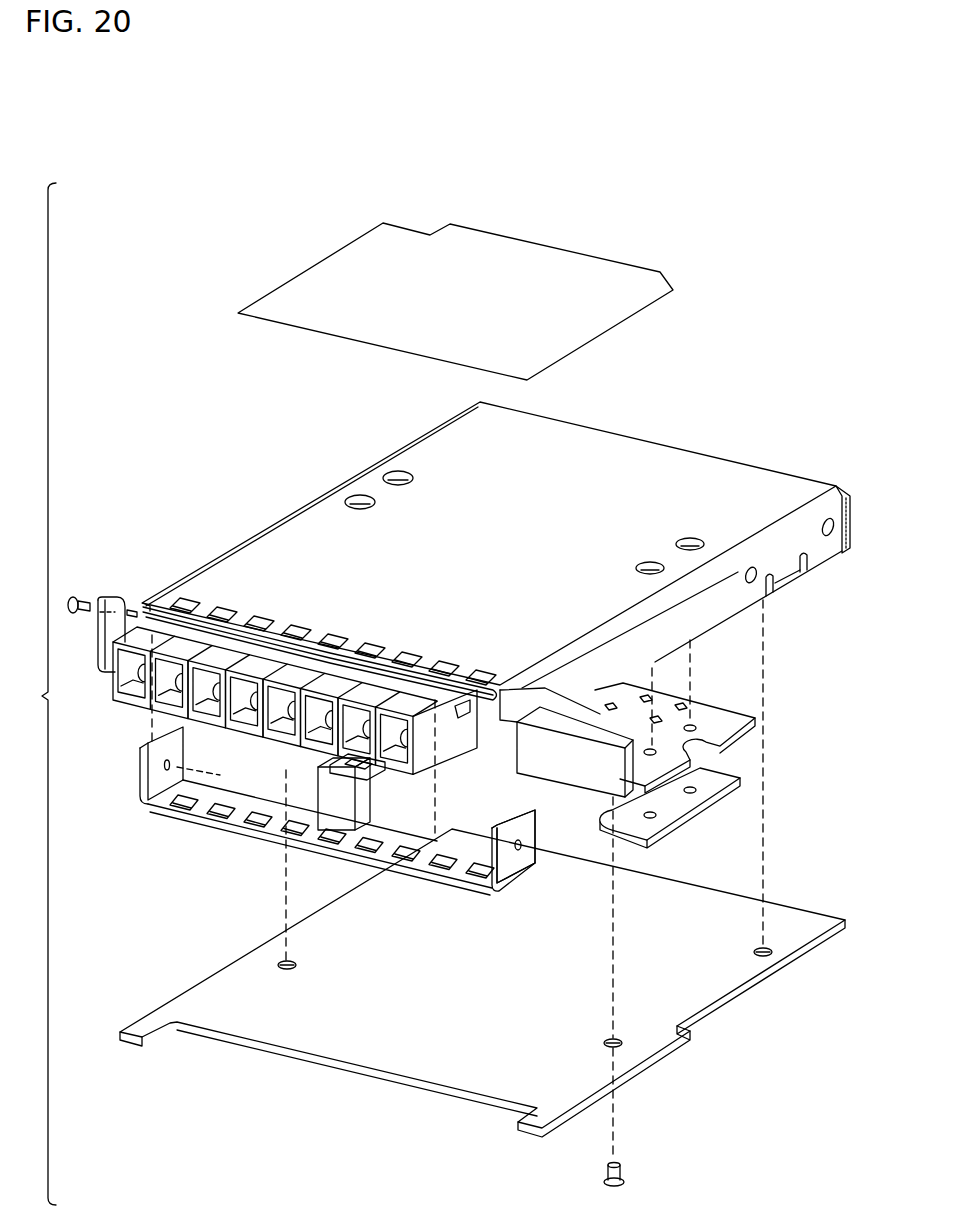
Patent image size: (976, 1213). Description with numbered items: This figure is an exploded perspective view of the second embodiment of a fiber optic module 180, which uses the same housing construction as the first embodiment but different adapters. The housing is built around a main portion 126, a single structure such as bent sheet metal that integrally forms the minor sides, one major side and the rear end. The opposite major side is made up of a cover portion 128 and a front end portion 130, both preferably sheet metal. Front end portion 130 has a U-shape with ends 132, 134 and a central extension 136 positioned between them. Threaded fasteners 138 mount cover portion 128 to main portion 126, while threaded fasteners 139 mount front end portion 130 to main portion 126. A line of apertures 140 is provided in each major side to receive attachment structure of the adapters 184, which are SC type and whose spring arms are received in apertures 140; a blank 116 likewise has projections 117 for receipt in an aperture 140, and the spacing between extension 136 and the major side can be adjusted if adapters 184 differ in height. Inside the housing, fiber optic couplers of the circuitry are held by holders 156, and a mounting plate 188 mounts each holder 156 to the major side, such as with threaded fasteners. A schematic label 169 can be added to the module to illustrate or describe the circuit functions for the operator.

The schematic label 169 is at (523, 242).
The main portion 126 is at (645, 460).
The threaded fasteners 139 is at (87, 597).
The end 132 is at (142, 772).
The adapters 184 is at (123, 698).
The apertures 140 is at (343, 637).
The projections 117 is at (330, 760).
The blank 116 is at (338, 820).
The front end portion 130 is at (173, 817).
The central extension 136 is at (247, 830).
The end 134 is at (518, 857).
The holders 156 is at (737, 729).
The mounting plate 188 is at (690, 825).
The cover portion 128 is at (350, 1070).
The threaded fasteners 138 is at (623, 1165).
The fiber optic module 180 is at (29, 694).